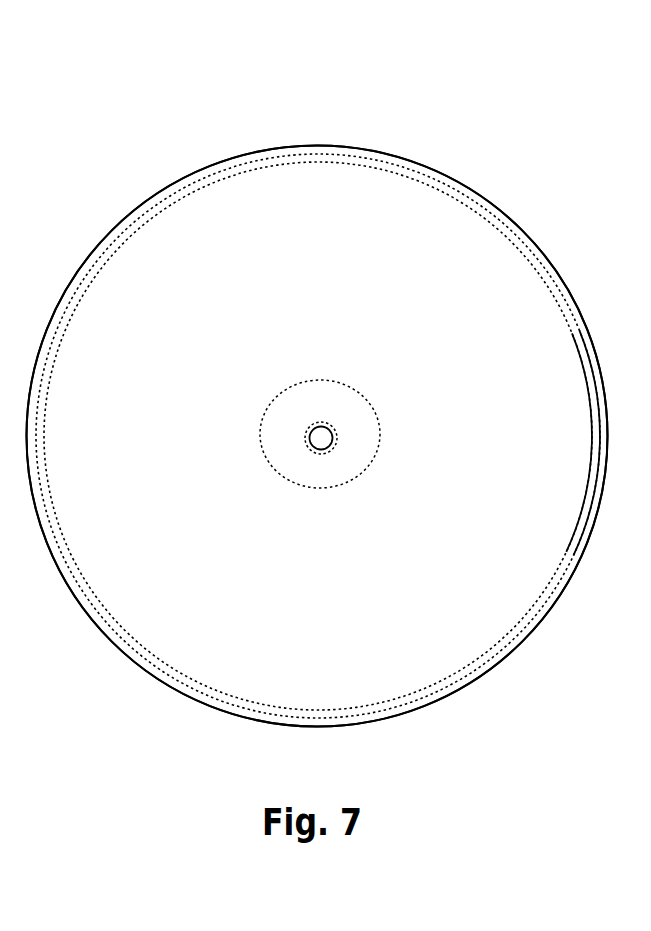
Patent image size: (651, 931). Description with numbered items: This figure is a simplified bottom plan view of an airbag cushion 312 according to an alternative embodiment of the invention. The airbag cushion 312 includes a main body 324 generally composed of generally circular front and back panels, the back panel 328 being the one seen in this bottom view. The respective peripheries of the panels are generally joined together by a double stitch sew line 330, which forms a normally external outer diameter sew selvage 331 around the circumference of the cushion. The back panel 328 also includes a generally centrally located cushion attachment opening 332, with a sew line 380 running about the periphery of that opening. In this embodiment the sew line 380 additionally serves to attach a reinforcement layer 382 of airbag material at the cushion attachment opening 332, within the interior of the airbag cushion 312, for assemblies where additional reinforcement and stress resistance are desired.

The airbag cushion 312 is at (475, 125).
The main body 324 is at (205, 200).
The outer diameter sew selvage 331 is at (557, 277).
The double stitch sew line 330 is at (452, 683).
The back panel 328 is at (155, 623).
The cushion attachment opening 332 is at (323, 423).
The sew line 380 is at (315, 453).
The reinforcement layer 382 is at (362, 478).